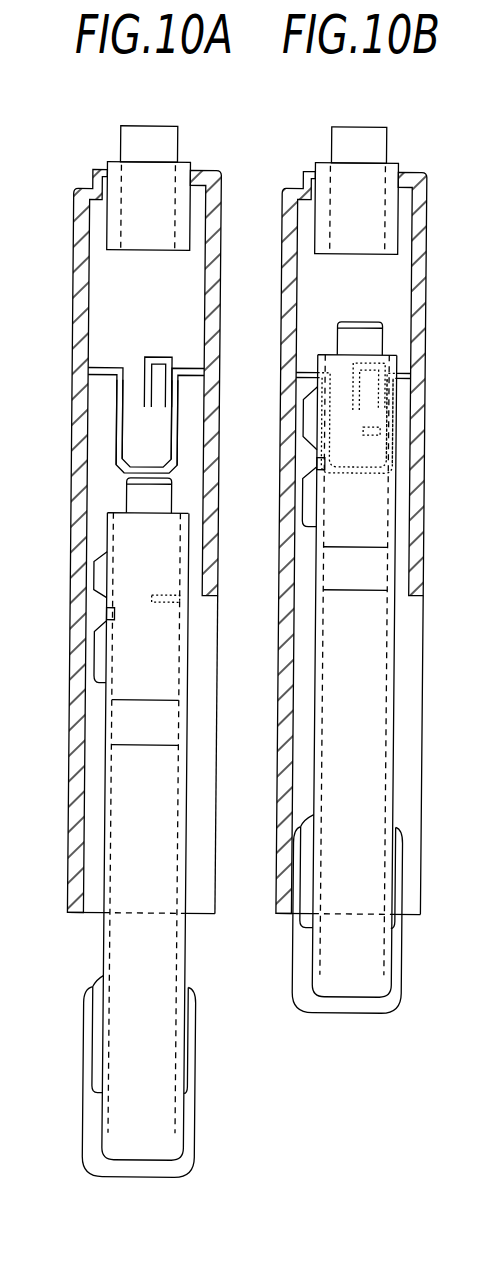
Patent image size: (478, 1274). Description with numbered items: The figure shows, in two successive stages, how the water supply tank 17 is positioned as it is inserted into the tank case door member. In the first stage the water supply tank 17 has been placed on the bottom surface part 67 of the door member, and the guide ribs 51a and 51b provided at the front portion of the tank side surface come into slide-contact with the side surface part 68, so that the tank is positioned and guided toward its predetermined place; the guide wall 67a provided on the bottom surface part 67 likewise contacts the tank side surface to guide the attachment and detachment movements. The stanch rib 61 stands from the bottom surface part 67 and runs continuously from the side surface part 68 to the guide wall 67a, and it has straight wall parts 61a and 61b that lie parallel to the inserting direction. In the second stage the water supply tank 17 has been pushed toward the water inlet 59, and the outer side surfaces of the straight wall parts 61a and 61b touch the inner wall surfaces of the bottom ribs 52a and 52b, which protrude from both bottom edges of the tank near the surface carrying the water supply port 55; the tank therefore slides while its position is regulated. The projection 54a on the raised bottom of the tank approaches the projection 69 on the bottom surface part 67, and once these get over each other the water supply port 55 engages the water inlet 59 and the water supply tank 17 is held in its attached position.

In FIG. 10A, the water supply tank 17 is at (203, 1154).
In FIG. 10B, the water supply tank 17 is at (392, 1018).
In FIG. 10A, the guide rib 51a is at (94, 567).
In FIG. 10A, the guide rib 51b is at (99, 663).
In FIG. 10A, the bottom rib 52a is at (181, 688).
In FIG. 10B, the bottom rib 52a is at (395, 527).
In FIG. 10A, the bottom rib 52b is at (108, 617).
In FIG. 10B, the bottom rib 52b is at (318, 467).
In FIG. 10A, the projection 54a is at (182, 599).
In FIG. 10B, the projection 54a is at (379, 431).
In FIG. 10A, the water supply port 55 is at (158, 498).
In FIG. 10B, the water supply port 55 is at (370, 350).
In FIG. 10A, the water inlet 59 is at (166, 138).
In FIG. 10B, the water inlet 59 is at (377, 139).
In FIG. 10A, the stanch rib 61 is at (101, 413).
In FIG. 10A, the straight wall part 61a is at (114, 441).
In FIG. 10B, the straight wall part 61a is at (320, 405).
In FIG. 10A, the straight wall part 61b is at (176, 428).
In FIG. 10B, the straight wall part 61b is at (395, 405).
In FIG. 10A, the bottom surface part 67 is at (106, 333).
In FIG. 10A, the guide wall 67a is at (212, 244).
In FIG. 10A, the side surface part 68 is at (70, 292).
In FIG. 10A, the projection 69 is at (158, 366).